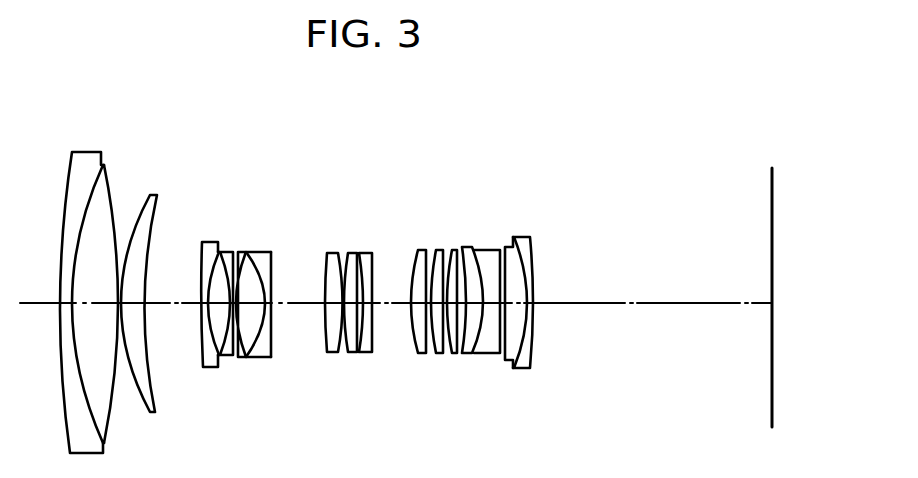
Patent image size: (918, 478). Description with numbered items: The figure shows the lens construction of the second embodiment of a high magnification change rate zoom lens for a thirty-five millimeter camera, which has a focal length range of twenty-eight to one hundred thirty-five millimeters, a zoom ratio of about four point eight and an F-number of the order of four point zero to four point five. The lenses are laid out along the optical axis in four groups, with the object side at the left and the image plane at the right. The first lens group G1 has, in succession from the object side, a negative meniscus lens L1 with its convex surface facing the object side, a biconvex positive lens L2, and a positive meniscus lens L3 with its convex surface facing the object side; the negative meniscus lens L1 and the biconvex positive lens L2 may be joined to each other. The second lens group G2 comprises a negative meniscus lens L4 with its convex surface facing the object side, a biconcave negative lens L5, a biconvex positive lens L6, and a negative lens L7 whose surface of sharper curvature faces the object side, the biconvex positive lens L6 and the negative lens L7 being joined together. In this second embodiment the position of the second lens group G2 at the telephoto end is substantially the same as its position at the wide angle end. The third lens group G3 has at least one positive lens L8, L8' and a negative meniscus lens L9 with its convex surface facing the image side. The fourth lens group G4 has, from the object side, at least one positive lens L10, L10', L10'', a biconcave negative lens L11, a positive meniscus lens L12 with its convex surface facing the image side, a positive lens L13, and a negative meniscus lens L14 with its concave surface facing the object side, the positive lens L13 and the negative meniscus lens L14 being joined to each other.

The first lens group G1 is at (167, 101).
The second lens group G2 is at (297, 176).
The third lens group G3 is at (398, 176).
The fourth lens group G4 is at (670, 146).
The negative meniscus lens L1 is at (79, 156).
The biconvex positive lens L2 is at (108, 166).
The positive meniscus lens L3 is at (149, 193).
The negative meniscus lens L4 is at (207, 241).
The biconcave negative lens L5 is at (232, 252).
The biconvex positive lens L6 is at (247, 252).
The negative lens L7 is at (268, 252).
The positive lens L8 is at (325, 268).
The positive lens L8' is at (353, 268).
The negative meniscus lens L9 is at (368, 252).
The positive lens L10 is at (417, 268).
The positive lens L10' is at (450, 268).
The positive lens L10'' is at (476, 268).
The biconcave negative lens L11 is at (483, 248).
The positive meniscus lens L12 is at (499, 249).
The positive lens L13 is at (512, 244).
The negative meniscus lens L14 is at (529, 237).